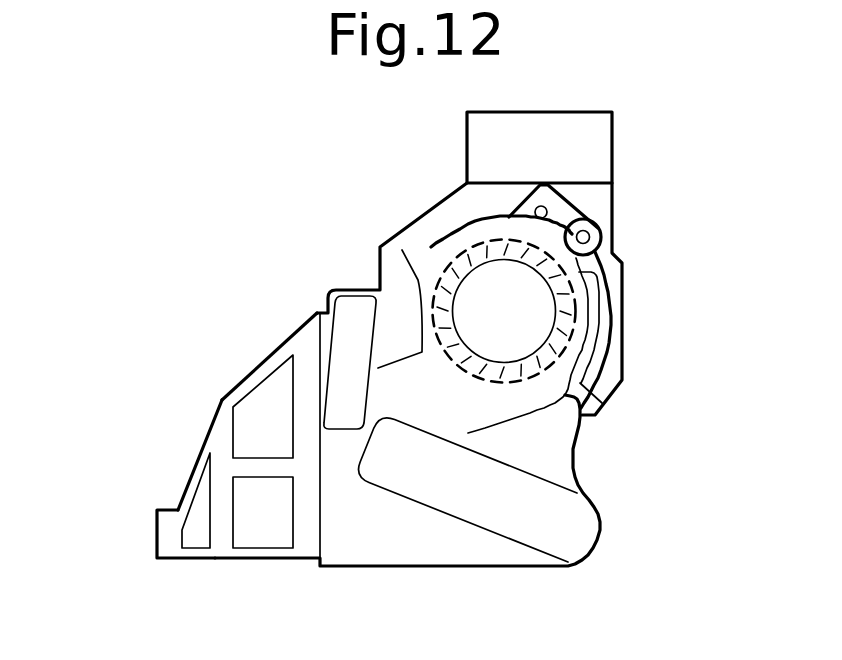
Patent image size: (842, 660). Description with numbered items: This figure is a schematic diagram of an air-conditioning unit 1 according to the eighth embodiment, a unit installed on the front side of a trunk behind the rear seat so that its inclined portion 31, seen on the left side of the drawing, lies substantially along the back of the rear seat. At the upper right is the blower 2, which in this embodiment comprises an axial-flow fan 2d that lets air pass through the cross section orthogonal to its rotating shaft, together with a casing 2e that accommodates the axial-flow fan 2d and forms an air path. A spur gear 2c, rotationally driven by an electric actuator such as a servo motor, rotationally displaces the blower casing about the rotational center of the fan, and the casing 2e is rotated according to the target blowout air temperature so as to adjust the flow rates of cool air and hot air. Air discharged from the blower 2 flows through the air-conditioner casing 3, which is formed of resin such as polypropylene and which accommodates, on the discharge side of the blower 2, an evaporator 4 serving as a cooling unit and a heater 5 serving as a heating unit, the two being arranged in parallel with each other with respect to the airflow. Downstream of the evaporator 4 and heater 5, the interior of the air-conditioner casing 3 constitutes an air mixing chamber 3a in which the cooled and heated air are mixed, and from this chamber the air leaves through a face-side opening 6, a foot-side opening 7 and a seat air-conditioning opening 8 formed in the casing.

The air-conditioning unit 1 is at (623, 126).
The blower 2 is at (623, 313).
The spur gear 2c is at (590, 213).
The axial-flow fan 2d is at (455, 273).
The casing 2e is at (588, 297).
The air-conditioner casing 3 is at (578, 455).
The air mixing chamber 3a is at (222, 433).
The inclined portion of the air-conditioning unit 31 is at (185, 485).
The evaporator 4 is at (541, 497).
The heater 5 is at (348, 320).
The face-side opening 6 is at (263, 517).
The foot-side opening 7 is at (262, 410).
The seat air-conditioning opening 8 is at (190, 507).